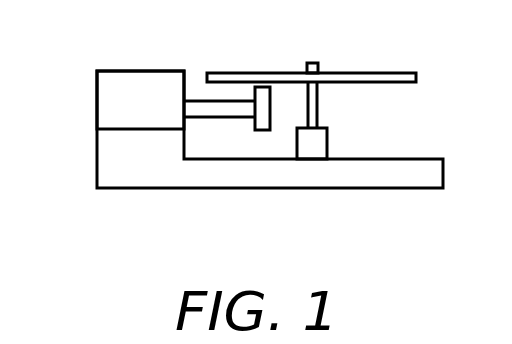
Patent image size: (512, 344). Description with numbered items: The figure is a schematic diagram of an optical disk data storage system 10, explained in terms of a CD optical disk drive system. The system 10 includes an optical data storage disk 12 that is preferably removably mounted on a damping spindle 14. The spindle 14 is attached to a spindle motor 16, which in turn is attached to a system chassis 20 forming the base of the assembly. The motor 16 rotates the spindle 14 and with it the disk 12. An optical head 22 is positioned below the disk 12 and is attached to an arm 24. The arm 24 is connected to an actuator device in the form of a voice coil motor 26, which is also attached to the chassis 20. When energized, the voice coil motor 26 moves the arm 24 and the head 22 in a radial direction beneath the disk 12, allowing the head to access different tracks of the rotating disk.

The optical disk data storage system 10 is at (124, 224).
The optical data storage disk 12 is at (397, 72).
The damping spindle 14 is at (317, 95).
The spindle motor 16 is at (327, 143).
The system chassis 20 is at (406, 184).
The optical head 22 is at (263, 88).
The arm 24 is at (195, 101).
The voice coil motor 26 is at (108, 73).